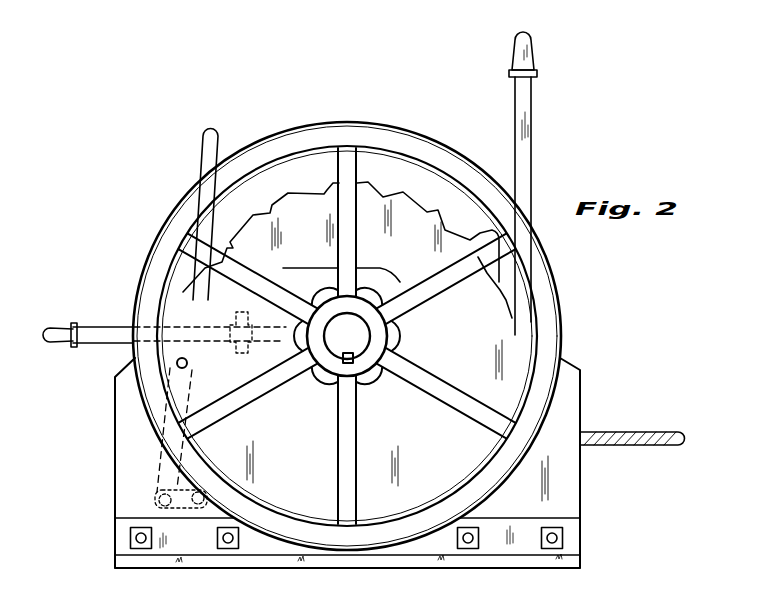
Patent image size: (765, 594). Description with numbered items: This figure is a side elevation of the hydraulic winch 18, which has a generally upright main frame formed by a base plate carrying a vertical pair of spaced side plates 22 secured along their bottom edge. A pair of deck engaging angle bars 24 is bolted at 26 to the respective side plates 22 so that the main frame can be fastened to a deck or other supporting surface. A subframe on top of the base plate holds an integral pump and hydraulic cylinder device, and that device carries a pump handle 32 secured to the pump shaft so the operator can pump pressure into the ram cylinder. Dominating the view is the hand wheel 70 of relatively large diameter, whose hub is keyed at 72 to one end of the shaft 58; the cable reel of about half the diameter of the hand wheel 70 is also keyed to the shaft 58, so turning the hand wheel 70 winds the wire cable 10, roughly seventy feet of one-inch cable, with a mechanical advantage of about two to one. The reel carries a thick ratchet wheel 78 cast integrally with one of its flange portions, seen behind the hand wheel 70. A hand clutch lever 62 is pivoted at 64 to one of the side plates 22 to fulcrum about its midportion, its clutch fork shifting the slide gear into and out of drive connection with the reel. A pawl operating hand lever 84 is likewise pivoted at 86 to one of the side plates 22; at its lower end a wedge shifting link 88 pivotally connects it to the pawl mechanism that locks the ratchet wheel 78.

The wire cable 10 is at (637, 432).
The winch 18 is at (95, 481).
The side plates 22 is at (578, 376).
The deck engaging angle bars 24 is at (543, 568).
The bolts 26 is at (557, 535).
The pump handle 32 is at (532, 110).
The shaft 58 is at (371, 336).
The hand clutch lever 62 is at (106, 300).
The pivot 64 is at (246, 320).
The hand wheel 70 is at (361, 336).
The key 72 is at (365, 379).
The ratchet wheel 78 is at (428, 210).
The pawl operating hand lever 84 is at (198, 171).
The pivot 86 is at (188, 364).
The wedge shifting link 88 is at (160, 511).